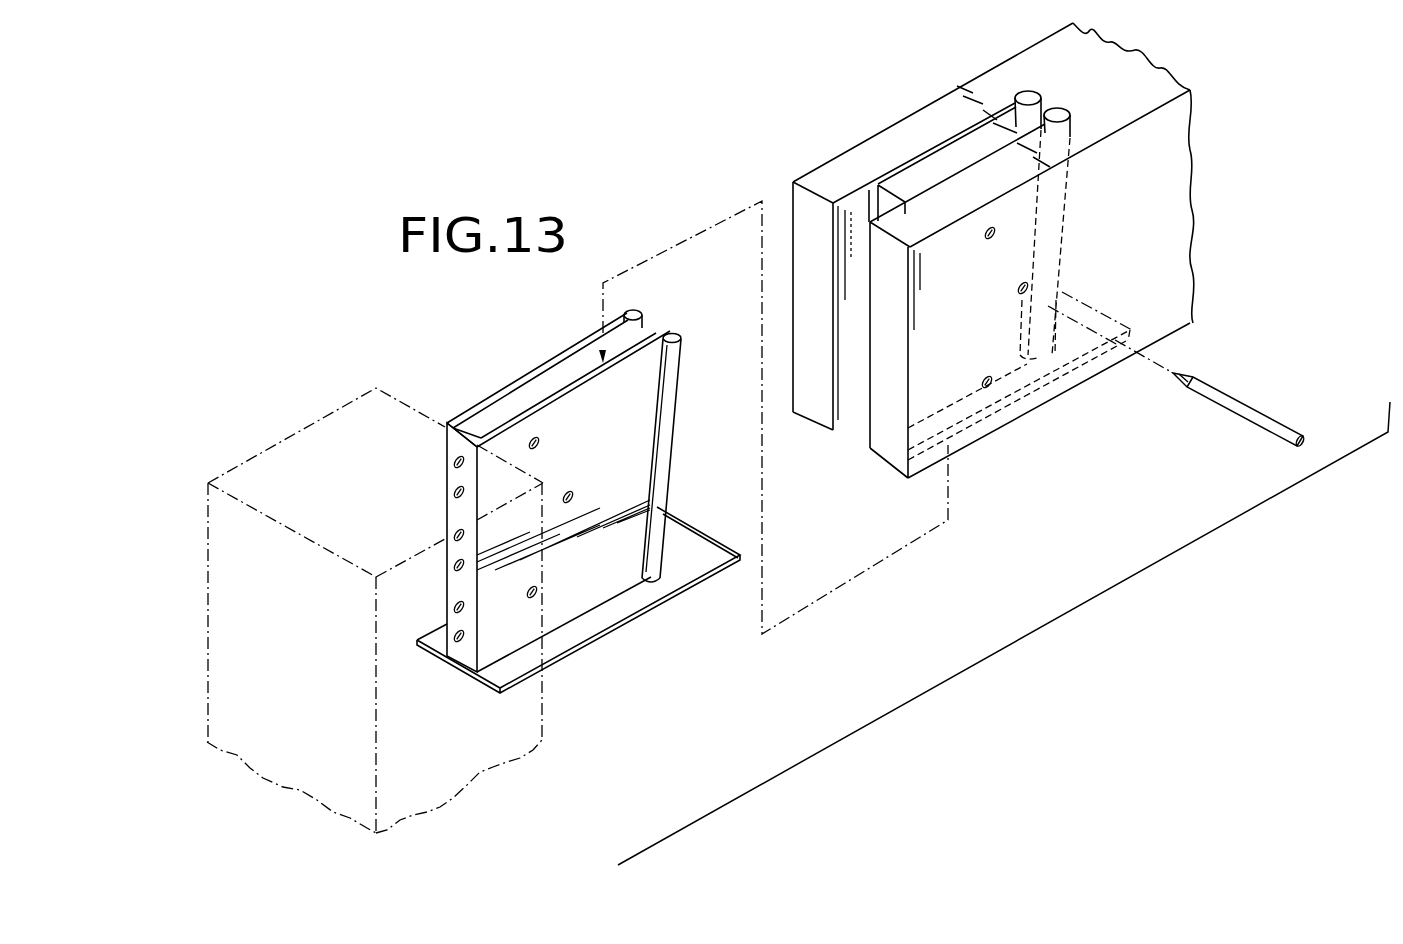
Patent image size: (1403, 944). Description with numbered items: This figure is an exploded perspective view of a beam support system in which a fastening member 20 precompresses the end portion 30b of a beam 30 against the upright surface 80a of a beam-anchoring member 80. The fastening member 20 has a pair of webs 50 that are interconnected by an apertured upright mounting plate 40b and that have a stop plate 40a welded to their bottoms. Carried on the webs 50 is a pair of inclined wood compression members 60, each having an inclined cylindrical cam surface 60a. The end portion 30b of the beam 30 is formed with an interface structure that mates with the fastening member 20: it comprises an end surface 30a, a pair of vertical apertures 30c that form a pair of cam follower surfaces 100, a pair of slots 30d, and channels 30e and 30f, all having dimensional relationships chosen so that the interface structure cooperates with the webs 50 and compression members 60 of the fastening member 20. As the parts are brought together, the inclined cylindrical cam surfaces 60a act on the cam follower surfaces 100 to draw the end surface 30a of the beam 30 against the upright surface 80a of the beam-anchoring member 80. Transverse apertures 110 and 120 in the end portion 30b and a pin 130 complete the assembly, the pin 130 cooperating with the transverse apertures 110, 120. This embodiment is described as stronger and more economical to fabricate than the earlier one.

The fastening member 20 is at (486, 388).
The beam 30 is at (928, 90).
The end surface 30a is at (888, 430).
The end portion of the beam 30b is at (868, 160).
The vertical apertures 30c is at (1072, 110).
The slots 30d is at (903, 163).
The channel 30e is at (852, 210).
The channel 30f is at (887, 464).
The stop plate 40a is at (686, 568).
The upright mounting plate 40b is at (457, 585).
The webs 50 is at (627, 458).
The inclined wood compression members 60 is at (666, 403).
The inclined cylindrical cam surfaces 60a is at (642, 545).
The beam-anchoring member 80 is at (285, 437).
The upright surface 80a is at (542, 692).
The cam follower surfaces 100 is at (1030, 343).
The transverse aperture 110 is at (986, 378).
The transverse aperture 120 is at (1024, 284).
The pin 130 is at (1277, 420).